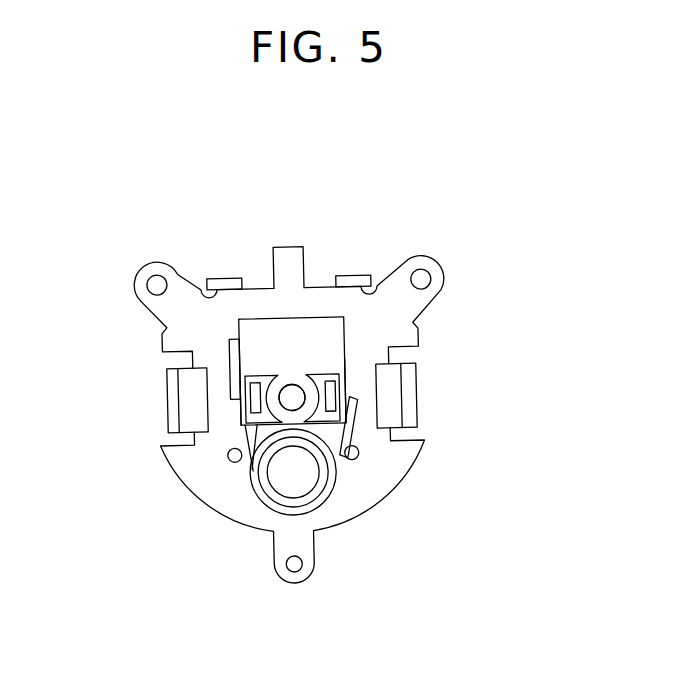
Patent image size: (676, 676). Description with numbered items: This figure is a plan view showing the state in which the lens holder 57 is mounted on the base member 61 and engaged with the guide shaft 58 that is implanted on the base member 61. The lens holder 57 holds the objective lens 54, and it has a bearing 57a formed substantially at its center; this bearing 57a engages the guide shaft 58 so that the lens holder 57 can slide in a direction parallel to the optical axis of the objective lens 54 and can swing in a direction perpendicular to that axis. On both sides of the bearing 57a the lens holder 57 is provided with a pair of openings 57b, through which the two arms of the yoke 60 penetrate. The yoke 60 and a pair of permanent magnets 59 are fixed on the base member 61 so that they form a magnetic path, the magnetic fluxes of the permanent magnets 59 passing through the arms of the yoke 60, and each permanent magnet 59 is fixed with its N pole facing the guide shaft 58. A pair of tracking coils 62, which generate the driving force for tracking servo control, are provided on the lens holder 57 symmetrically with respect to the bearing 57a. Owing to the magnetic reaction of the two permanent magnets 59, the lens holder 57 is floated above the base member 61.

The objective lens 54 is at (303, 481).
The lens holder 57 is at (318, 328).
The bearing 57a is at (296, 386).
The openings 57b is at (329, 378).
The guide shaft 58 is at (289, 386).
The permanent magnets 59 is at (187, 401).
The yoke 60 is at (243, 424).
The base member 61 is at (375, 494).
The tracking coils 62 is at (235, 348).